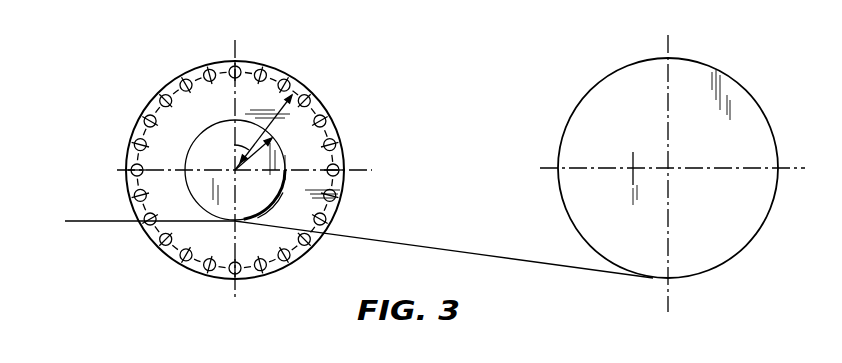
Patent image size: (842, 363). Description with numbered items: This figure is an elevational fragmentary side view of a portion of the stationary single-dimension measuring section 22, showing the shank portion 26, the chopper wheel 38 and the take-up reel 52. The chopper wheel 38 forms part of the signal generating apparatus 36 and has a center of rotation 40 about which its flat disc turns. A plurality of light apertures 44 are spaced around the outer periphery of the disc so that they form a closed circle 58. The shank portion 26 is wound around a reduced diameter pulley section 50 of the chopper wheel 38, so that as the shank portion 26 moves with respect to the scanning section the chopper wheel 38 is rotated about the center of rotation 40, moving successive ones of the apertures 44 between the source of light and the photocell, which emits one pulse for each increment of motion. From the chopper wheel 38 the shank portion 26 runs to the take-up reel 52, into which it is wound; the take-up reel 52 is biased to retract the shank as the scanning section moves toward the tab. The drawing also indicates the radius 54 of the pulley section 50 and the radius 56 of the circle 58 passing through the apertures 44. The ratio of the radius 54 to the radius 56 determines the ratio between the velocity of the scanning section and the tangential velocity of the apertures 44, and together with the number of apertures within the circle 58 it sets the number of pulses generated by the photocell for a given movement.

The stationary single-dimension measuring section 22 is at (438, 104).
The shank portion 26 is at (112, 221).
The signal generating apparatus 36 is at (158, 75).
The chopper wheel 38 is at (345, 146).
The center of rotation 40 is at (235, 171).
The light apertures 44 is at (268, 63).
The reduced diameter pulley section 50 is at (275, 139).
The take-up reel 52 is at (740, 103).
The radius of the pulley section 54 is at (234, 147).
The radius of the aperture circle 56 is at (290, 100).
The circle passing through the apertures 58 is at (210, 82).